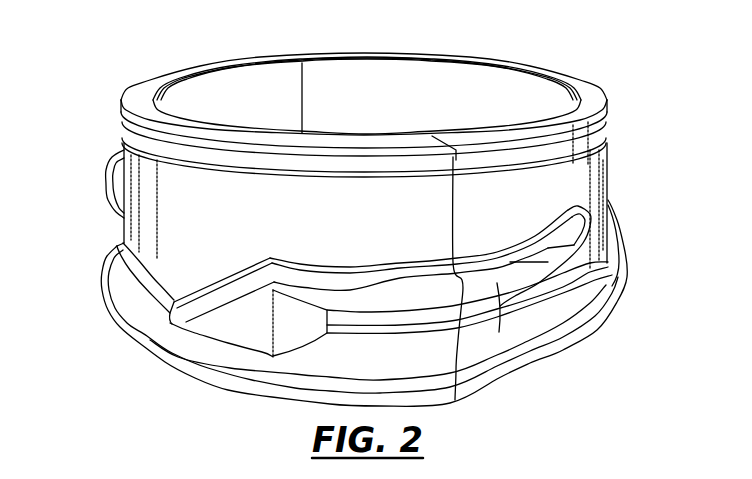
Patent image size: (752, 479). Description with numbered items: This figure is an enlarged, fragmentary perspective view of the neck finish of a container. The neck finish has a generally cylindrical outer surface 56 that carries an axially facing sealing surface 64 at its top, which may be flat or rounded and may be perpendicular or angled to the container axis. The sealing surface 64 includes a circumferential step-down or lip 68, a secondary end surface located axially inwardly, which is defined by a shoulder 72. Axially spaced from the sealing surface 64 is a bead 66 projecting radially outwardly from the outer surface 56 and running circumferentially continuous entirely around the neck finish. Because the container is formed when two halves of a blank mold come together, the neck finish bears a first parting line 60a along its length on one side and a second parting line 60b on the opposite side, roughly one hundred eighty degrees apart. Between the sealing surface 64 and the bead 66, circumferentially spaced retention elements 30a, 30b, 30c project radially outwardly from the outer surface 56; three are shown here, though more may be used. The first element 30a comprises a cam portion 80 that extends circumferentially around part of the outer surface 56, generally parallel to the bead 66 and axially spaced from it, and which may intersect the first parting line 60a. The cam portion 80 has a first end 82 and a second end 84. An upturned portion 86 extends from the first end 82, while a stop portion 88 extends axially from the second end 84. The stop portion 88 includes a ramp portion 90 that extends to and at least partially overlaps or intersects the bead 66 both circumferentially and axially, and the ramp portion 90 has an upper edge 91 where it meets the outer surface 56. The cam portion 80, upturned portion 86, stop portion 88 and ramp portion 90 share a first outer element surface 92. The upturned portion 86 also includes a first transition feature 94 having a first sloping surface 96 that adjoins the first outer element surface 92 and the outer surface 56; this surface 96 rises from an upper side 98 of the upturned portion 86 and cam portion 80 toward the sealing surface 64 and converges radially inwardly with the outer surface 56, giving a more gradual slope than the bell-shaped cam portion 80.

The first retention element 30a is at (383, 302).
The retention element 30b is at (622, 212).
The retention element 30c is at (104, 178).
The outer surface 56 is at (610, 140).
The first parting line 60a is at (450, 197).
The second parting line 60b is at (303, 73).
The axially facing sealing surface 64 is at (578, 96).
The bead 66 is at (613, 312).
The step-down 68 is at (158, 92).
The shoulder 72 is at (153, 97).
The cam portion 80 is at (358, 290).
The first end 82 is at (517, 277).
The second end 84 is at (290, 287).
The upturned portion 86 is at (560, 258).
The stop portion 88 is at (251, 313).
The ramp portion 90 is at (203, 288).
The upper edge 91 is at (218, 283).
The first outer element surface 92 is at (265, 327).
The first transition feature 94 is at (548, 245).
The first sloping surface 96 is at (571, 224).
The upper side 98 is at (524, 254).